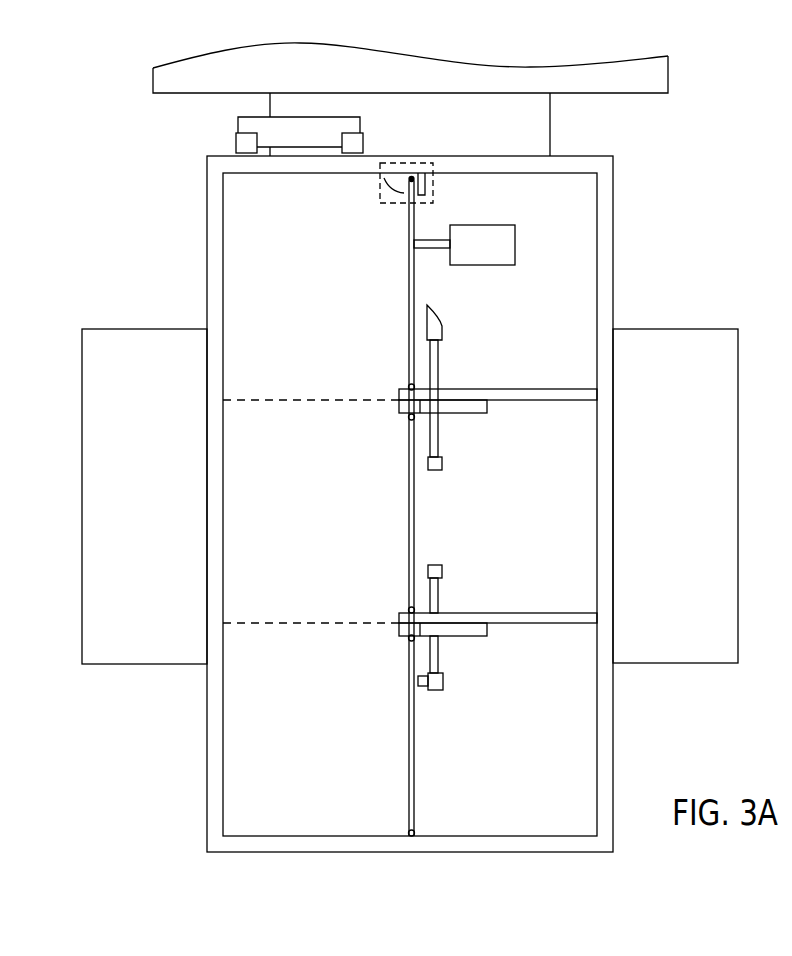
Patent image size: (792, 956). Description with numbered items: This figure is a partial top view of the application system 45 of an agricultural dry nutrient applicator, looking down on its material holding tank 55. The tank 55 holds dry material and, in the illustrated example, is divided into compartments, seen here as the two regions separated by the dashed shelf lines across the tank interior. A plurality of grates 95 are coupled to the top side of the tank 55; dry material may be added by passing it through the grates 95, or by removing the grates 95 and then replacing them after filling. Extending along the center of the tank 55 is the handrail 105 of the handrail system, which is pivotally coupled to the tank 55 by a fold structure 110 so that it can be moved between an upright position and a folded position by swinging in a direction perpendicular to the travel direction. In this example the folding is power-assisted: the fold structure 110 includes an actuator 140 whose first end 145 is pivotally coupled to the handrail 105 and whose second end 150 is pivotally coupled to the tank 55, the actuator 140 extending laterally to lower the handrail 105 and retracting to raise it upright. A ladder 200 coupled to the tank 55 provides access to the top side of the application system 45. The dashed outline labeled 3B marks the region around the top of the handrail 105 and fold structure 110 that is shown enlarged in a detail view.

The application system 45 is at (690, 287).
The tank 55 is at (603, 432).
The grates 95 is at (250, 293).
The handrail 105 is at (414, 291).
The fold structure 110 is at (400, 182).
The actuator 140 is at (499, 190).
The first end 145 is at (416, 241).
The second end 150 is at (515, 248).
The ladder 200 is at (260, 133).
The detail view 3B is at (380, 202).